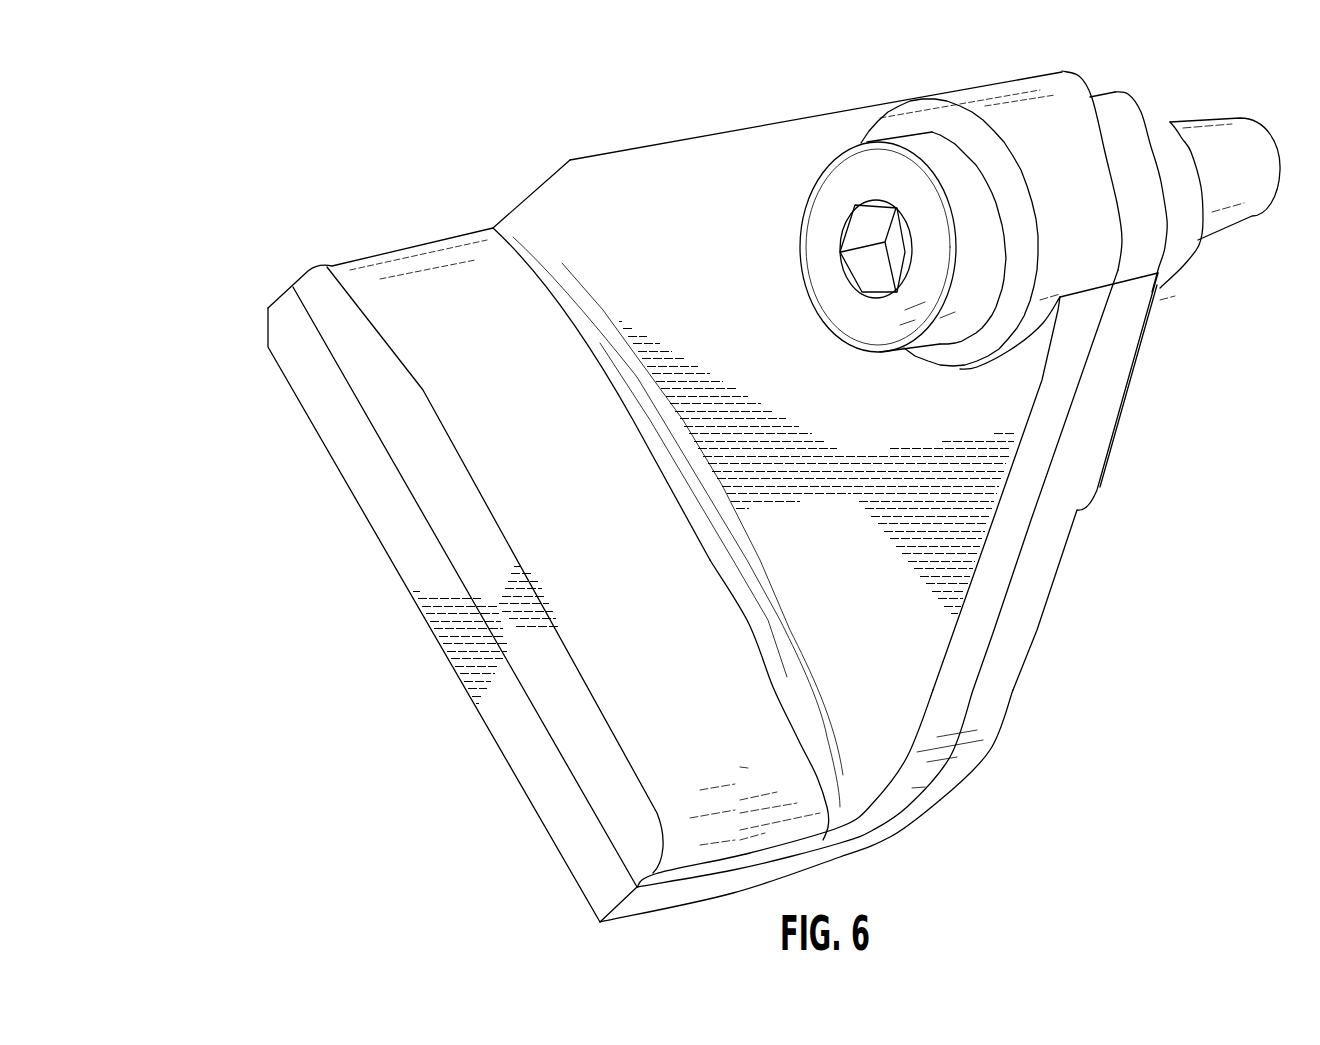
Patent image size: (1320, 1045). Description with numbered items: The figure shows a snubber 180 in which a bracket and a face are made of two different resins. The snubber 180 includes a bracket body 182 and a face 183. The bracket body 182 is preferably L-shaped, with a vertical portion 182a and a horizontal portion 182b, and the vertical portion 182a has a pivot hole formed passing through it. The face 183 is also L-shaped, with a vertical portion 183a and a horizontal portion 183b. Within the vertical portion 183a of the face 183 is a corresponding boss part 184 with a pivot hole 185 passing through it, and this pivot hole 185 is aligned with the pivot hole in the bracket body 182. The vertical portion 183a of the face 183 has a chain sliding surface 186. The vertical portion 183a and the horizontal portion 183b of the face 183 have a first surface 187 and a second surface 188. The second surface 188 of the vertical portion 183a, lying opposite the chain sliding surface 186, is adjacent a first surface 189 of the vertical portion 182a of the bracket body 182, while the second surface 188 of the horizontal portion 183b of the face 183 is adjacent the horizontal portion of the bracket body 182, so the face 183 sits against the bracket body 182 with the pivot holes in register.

The snubber 180 is at (180, 276).
The bracket body 182 is at (1023, 593).
The vertical portion 182a is at (1010, 668).
The horizontal portion 182b is at (328, 400).
The face 183 is at (567, 187).
The vertical portion 183a is at (1000, 537).
The horizontal portion 183b is at (800, 822).
The boss part 184 is at (1046, 130).
The pivot hole 185 is at (932, 130).
The chain sliding surface 186 is at (457, 305).
The first surface 187 is at (722, 169).
The second surface 188 is at (1047, 487).
The first surface 189 is at (448, 558).